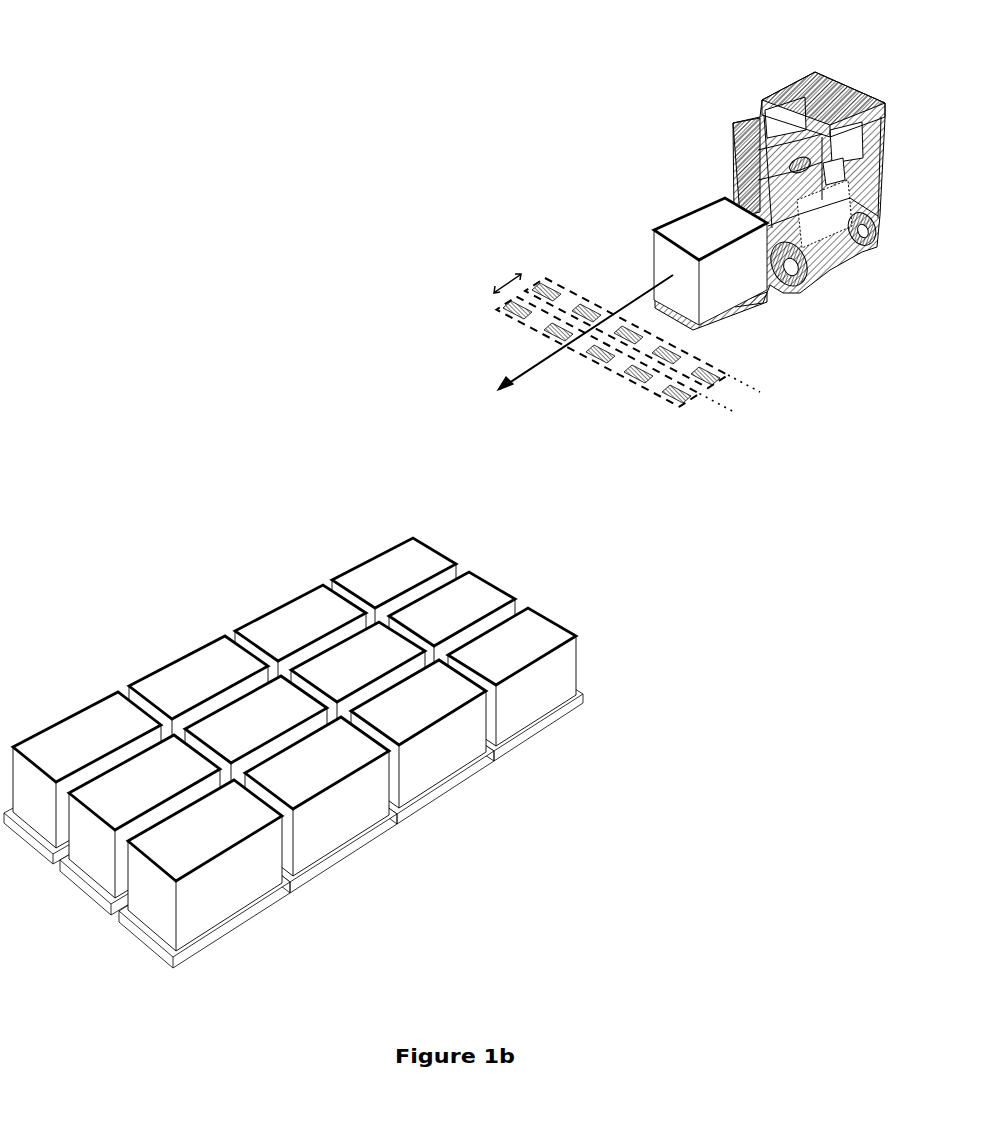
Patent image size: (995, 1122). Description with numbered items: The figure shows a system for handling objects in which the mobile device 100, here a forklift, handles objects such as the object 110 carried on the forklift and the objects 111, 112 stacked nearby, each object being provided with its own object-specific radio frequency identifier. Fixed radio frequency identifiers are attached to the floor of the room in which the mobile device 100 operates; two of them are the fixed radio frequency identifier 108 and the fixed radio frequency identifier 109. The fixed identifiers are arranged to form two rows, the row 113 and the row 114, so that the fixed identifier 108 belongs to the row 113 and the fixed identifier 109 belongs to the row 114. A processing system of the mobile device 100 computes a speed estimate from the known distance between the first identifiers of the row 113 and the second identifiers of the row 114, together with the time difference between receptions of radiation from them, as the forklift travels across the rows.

The mobile device 100 is at (793, 80).
The fixed radio frequency identifier 108 is at (623, 332).
The fixed radio frequency identifier 109 is at (595, 358).
The object 110 is at (705, 223).
The object 111 is at (378, 578).
The object 112 is at (480, 597).
The row 113 is at (551, 277).
The row 114 is at (632, 382).